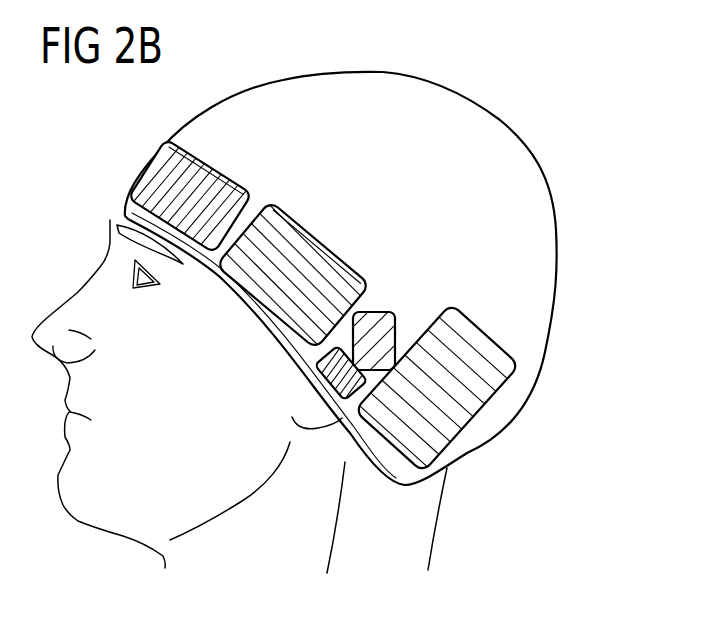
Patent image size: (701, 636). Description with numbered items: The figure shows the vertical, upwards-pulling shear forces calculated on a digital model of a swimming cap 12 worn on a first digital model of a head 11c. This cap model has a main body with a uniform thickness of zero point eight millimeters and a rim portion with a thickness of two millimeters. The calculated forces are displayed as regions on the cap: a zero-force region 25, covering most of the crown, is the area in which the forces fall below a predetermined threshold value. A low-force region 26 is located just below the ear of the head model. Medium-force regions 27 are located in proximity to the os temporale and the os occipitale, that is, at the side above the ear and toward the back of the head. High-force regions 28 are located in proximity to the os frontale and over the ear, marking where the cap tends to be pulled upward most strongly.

The head of the person 11c is at (133, 508).
The cap 12 is at (500, 143).
The zero-force region 25 is at (488, 240).
The low-force region 26 is at (322, 373).
The medium-force regions 27 is at (315, 262).
The high-force regions 28 is at (208, 177).